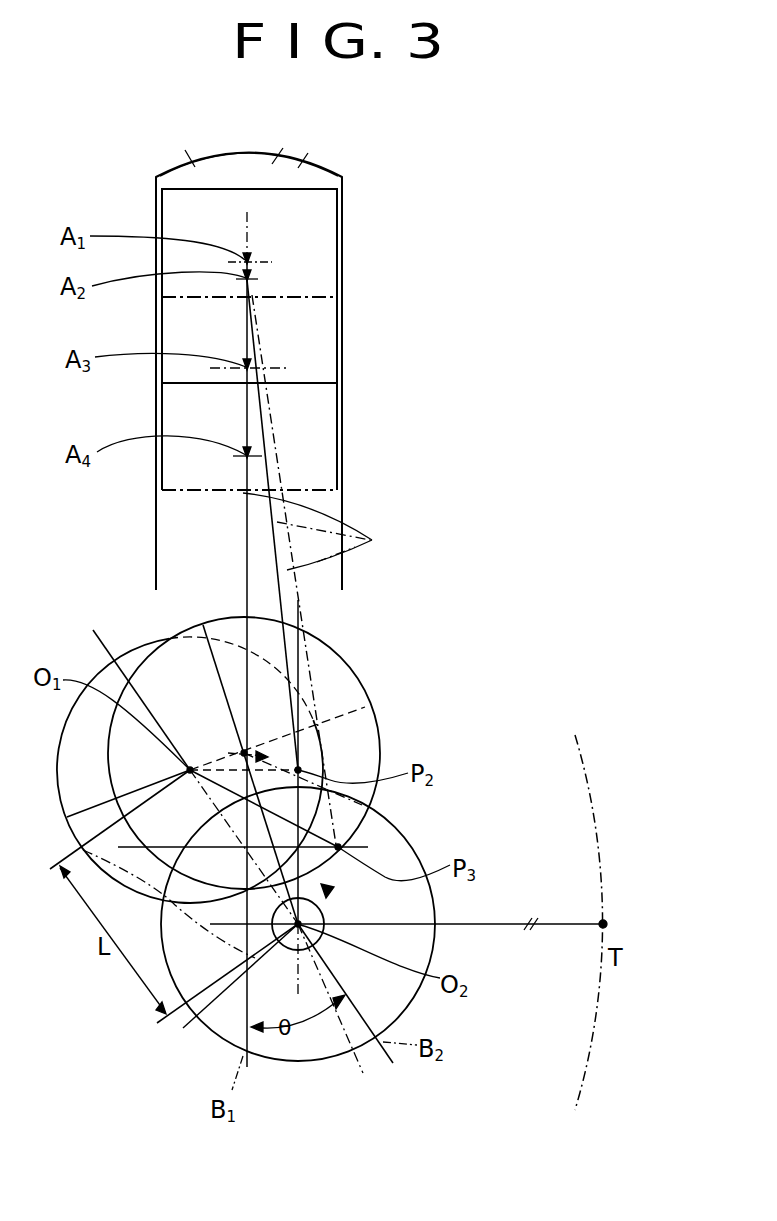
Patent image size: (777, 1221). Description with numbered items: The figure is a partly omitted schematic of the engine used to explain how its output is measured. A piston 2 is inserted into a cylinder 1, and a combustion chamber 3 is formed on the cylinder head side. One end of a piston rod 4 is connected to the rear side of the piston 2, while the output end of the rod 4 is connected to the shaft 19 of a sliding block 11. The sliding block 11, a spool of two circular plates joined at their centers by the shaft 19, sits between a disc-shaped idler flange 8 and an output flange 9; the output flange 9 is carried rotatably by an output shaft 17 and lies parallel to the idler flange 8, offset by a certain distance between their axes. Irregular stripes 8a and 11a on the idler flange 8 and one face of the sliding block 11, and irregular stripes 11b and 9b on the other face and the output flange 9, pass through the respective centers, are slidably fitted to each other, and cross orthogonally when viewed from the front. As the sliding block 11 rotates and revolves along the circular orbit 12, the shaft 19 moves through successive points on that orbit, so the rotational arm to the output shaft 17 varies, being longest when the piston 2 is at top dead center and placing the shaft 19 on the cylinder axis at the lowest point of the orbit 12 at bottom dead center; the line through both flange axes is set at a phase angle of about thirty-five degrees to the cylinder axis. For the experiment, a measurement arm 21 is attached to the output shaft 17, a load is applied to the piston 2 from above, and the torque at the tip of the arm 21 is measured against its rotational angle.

The cylinder 1 is at (342, 178).
The piston 2 is at (313, 383).
The combustion chamber 3 is at (278, 158).
The piston rod 4 is at (313, 531).
The idler flange 8 is at (60, 748).
The irregular stripe 8a is at (72, 815).
The output flange 9 is at (415, 850).
The irregular stripe 9b is at (339, 1018).
The sliding block 11 is at (335, 648).
The irregular stripe 11a is at (352, 712).
The irregular stripe 11b is at (210, 655).
The circular orbit 12 is at (78, 840).
The output shaft 17 is at (224, 992).
The shaft 19 is at (244, 753).
The measurement arm 21 is at (518, 914).